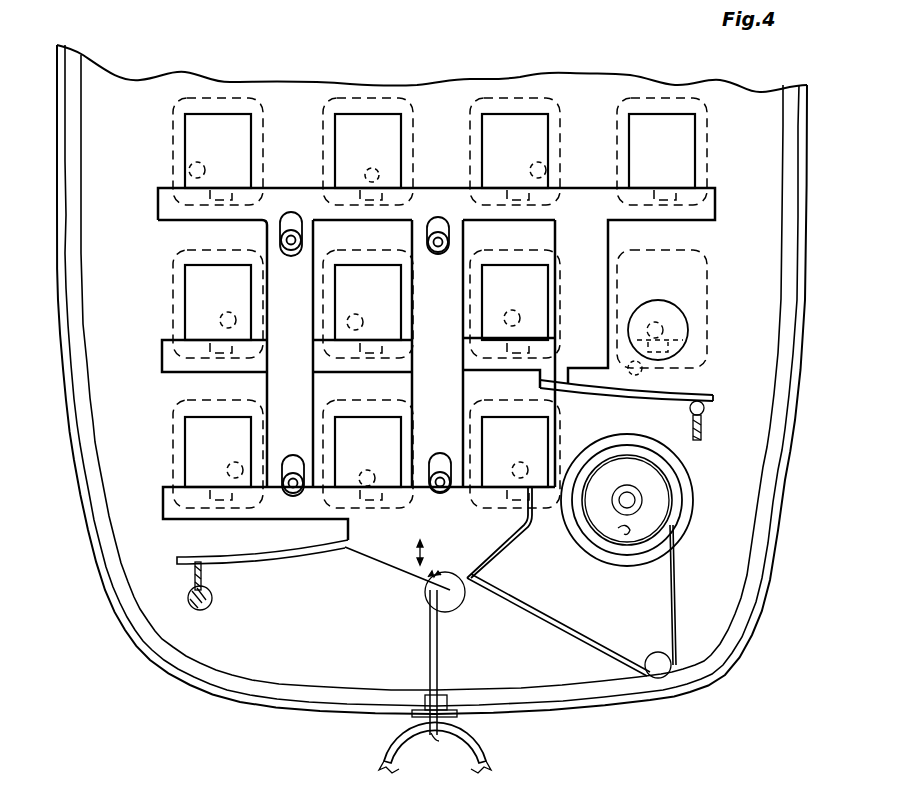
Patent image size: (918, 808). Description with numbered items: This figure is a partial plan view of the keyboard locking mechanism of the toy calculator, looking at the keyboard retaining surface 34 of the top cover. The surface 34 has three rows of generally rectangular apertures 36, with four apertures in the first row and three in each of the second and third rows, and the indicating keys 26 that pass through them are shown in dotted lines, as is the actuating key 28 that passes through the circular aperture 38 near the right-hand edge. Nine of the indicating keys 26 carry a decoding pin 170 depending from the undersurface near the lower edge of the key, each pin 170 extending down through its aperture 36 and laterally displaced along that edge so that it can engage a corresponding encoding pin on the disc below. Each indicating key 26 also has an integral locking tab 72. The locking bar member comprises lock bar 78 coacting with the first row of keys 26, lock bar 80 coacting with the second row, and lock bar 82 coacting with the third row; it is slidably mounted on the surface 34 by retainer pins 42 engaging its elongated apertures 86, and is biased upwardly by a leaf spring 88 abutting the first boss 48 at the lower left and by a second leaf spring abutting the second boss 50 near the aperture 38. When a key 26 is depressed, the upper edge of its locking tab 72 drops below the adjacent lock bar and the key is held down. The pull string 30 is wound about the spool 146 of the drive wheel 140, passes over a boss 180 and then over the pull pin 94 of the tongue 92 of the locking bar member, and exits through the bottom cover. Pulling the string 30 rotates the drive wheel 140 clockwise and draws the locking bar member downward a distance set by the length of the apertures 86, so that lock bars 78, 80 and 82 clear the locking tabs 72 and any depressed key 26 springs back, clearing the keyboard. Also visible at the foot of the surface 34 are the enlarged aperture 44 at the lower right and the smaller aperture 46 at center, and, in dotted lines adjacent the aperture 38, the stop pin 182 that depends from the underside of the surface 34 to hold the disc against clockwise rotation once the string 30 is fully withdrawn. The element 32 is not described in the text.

The indicating key 26 is at (260, 100).
The actuating key 28 is at (705, 273).
The pull string 30 is at (428, 650).
The receiving cup 32 is at (482, 750).
The keyboard retaining surface 34 is at (140, 278).
The rectangular aperture 36 is at (207, 120).
The circular aperture 38 is at (677, 328).
The retainer pin 42 is at (288, 252).
The enlarged aperture 44 is at (688, 518).
The smaller aperture 46 is at (450, 603).
The first boss 48 is at (213, 597).
The second boss 50 is at (703, 427).
The locking tab 72 is at (208, 203).
The lock bar 78 is at (162, 203).
The lock bar 80 is at (162, 352).
The lock bar 82 is at (165, 503).
The elongated aperture 86 is at (288, 215).
The leaf spring 88 is at (247, 553).
The tongue 92 is at (378, 560).
The pull pin 94 is at (450, 565).
The drive wheel 140 is at (620, 473).
The spool 146 is at (672, 488).
The decoding pin 170 is at (199, 172).
The boss 180 is at (653, 652).
The stop pin 182 is at (642, 368).